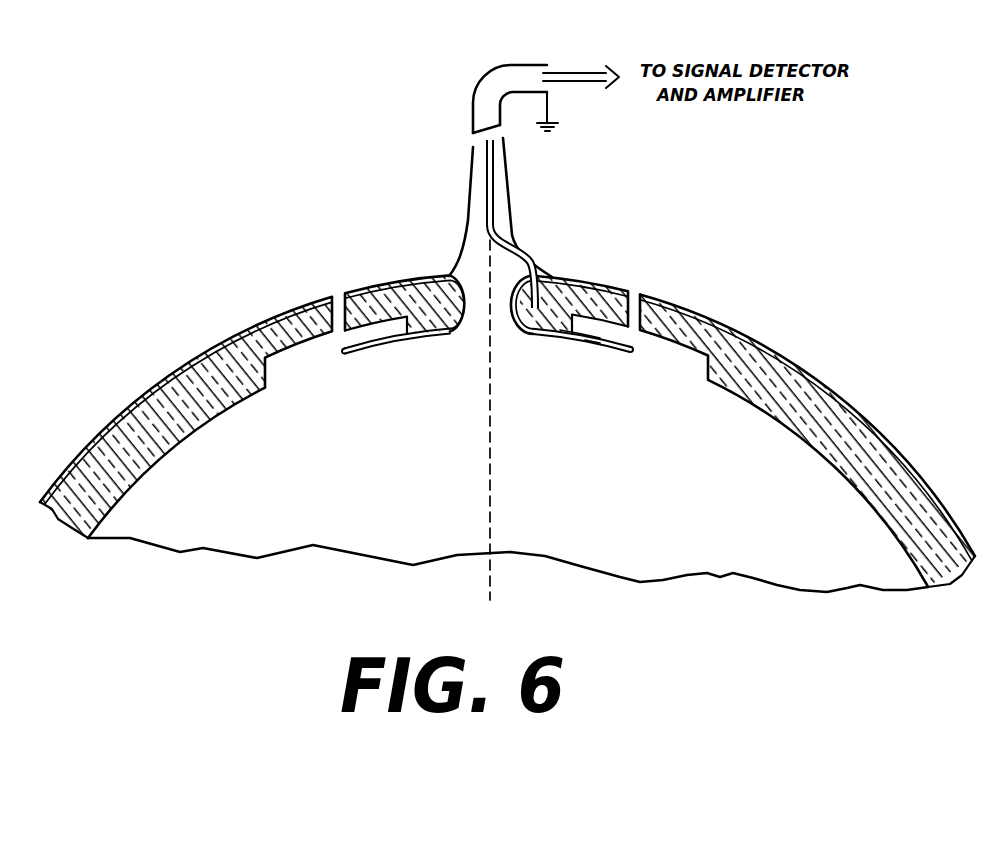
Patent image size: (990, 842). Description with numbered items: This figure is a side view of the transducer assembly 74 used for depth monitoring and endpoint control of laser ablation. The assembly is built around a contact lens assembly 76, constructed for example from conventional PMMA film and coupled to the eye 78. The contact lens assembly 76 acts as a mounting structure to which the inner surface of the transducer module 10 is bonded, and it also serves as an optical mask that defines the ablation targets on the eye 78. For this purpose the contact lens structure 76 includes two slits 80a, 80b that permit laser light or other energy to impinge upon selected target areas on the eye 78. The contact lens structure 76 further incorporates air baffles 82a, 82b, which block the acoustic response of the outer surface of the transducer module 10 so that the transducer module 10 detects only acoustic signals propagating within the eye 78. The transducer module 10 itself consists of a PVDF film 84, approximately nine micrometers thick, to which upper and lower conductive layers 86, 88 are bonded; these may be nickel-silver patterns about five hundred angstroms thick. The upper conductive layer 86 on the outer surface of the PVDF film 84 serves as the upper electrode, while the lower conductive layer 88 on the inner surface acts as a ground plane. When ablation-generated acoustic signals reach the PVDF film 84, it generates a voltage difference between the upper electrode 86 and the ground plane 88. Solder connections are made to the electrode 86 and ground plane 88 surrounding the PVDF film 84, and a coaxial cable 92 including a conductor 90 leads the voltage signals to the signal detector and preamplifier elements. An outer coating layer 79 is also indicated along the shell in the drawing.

The transducer module 10 is at (603, 353).
The transducer assembly 74 is at (507, 414).
The contact lens assembly 76 is at (186, 411).
The eye 78 is at (746, 512).
The outer conductive coating 79 is at (917, 471).
The slit 80a is at (337, 292).
The slit 80b is at (807, 430).
The air baffle 82a is at (288, 317).
The air baffle 82b is at (581, 352).
The PVDF film 84 is at (348, 348).
The upper conductive layer 86 is at (580, 348).
The lower conductive layer 88 is at (390, 348).
The conductor 90 is at (548, 340).
The coaxial cable 92 is at (508, 196).